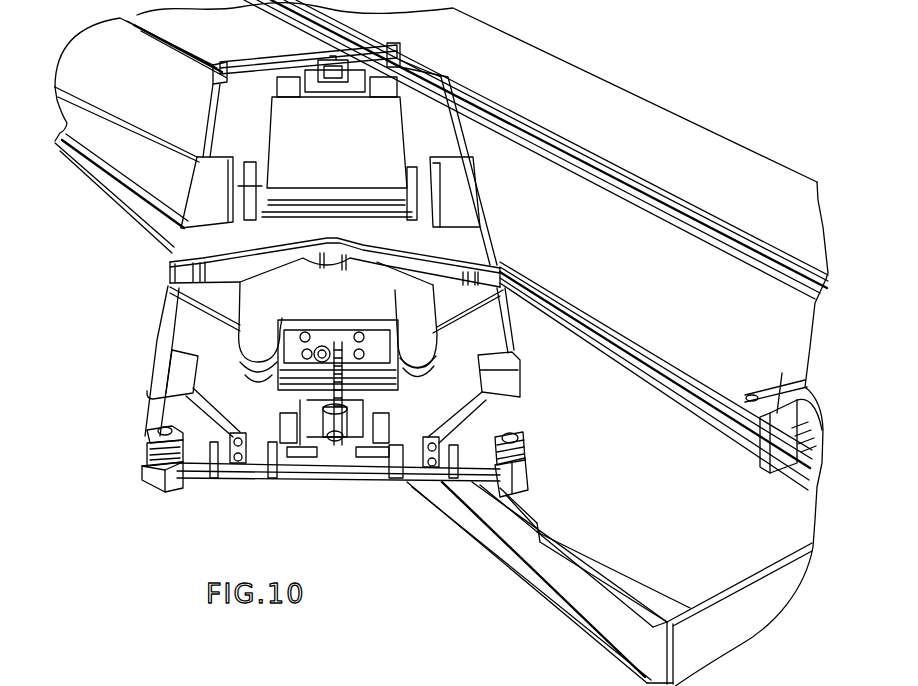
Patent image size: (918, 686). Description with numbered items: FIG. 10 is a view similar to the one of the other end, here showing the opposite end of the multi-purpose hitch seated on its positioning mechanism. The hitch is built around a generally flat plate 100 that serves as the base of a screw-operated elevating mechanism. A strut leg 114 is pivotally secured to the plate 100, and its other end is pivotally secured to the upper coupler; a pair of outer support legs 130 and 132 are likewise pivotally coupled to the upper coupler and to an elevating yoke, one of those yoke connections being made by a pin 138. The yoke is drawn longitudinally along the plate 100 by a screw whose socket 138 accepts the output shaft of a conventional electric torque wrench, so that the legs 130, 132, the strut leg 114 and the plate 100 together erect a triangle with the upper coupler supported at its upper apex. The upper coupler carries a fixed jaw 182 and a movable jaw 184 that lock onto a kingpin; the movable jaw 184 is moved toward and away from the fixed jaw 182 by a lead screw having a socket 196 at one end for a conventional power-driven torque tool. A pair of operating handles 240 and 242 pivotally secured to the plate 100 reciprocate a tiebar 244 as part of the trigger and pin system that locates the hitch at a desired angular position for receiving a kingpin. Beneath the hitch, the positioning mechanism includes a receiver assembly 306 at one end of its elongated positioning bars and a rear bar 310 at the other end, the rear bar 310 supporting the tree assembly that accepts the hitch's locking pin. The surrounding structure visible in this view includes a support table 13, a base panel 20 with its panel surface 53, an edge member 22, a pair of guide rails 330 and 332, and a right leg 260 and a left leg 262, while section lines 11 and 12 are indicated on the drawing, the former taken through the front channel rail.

The support table 13 is at (640, 70).
The base panel 20 is at (683, 254).
The panel surface 53 is at (578, 297).
The front channel rail (section line) 11 is at (552, 492).
The section line 12 is at (840, 486).
The edge member 22 is at (734, 678).
The guide rail 332 is at (651, 199).
The guide rail 330 is at (673, 397).
The receiver assembly 306 is at (783, 408).
The flat plate 100 is at (237, 107).
The outer support leg 130 is at (192, 173).
The rear bar 310 is at (248, 57).
The strut leg 114 is at (408, 130).
The outer support leg 132 is at (482, 192).
The fixed jaw 182 is at (487, 240).
The movable jaw 184 is at (417, 330).
The socket 196 is at (323, 341).
The pin 138 is at (348, 362).
The tiebar 244 is at (300, 481).
The operating handle 242 is at (155, 372).
The operating handle 240 is at (520, 379).
The left leg 262 is at (143, 462).
The right leg 260 is at (527, 457).